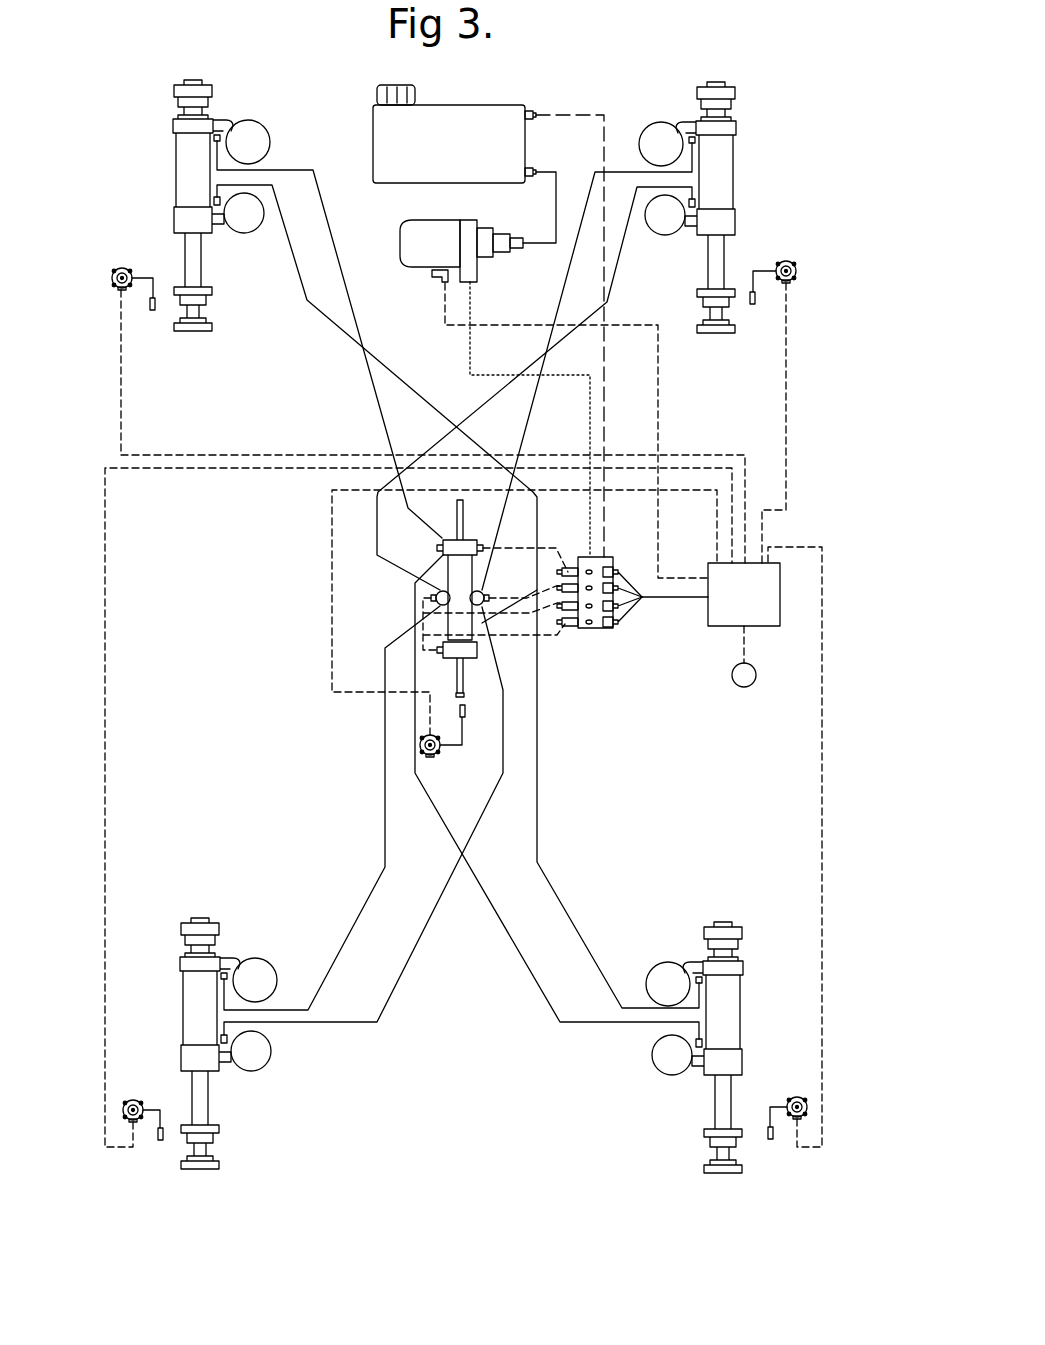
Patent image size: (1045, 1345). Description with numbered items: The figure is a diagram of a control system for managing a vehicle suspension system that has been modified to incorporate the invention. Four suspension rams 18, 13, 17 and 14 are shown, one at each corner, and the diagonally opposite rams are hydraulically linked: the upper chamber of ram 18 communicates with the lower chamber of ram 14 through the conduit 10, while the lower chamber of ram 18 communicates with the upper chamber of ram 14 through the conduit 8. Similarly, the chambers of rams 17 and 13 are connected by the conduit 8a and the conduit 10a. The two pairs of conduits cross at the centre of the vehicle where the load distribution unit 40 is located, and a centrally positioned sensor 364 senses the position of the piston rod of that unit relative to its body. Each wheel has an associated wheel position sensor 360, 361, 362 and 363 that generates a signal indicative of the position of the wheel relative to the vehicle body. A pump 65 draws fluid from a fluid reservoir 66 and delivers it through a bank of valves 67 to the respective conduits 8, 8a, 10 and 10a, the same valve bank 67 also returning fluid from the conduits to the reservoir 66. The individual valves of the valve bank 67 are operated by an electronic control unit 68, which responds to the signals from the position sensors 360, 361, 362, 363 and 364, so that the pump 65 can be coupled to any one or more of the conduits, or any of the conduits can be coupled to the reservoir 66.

The conduit 8 is at (290, 260).
The conduit 8a is at (617, 282).
The conduit 10 is at (302, 165).
The conduit 10a is at (615, 167).
The ram 13 is at (723, 165).
The ram 14 is at (732, 1013).
The ram 17 is at (190, 1018).
The ram 18 is at (180, 177).
The load distribution unit 40 is at (442, 545).
The pump 65 is at (425, 268).
The fluid reservoir 66 is at (495, 122).
The bank of valves 67 is at (598, 628).
The electronic control unit 68 is at (717, 618).
The wheel position sensor 360 is at (112, 282).
The wheel position sensor 361 is at (798, 270).
The wheel position sensor 362 is at (810, 1102).
The wheel position sensor 363 is at (127, 1117).
The centrally positioned sensor 364 is at (418, 752).